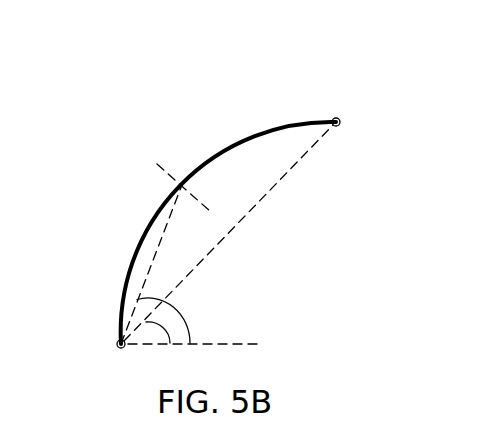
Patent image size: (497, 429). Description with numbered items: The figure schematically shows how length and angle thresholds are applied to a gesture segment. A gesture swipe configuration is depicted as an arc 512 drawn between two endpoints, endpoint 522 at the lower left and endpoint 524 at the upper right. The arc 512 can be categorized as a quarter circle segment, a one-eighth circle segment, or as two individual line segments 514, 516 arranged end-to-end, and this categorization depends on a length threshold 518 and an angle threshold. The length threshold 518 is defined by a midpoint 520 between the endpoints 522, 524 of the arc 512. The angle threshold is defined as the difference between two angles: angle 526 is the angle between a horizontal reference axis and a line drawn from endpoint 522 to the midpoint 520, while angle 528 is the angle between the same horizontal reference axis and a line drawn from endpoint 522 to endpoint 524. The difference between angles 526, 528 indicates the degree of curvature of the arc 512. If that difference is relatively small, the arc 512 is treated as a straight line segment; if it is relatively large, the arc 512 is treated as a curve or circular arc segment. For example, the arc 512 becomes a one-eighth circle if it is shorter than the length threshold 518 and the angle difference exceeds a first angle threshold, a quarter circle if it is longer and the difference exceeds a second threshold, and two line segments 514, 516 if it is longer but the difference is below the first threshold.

The arc 512 is at (124, 108).
The line segment 514 is at (138, 247).
The line segment 516 is at (245, 139).
The length threshold 518 is at (156, 252).
The midpoint 520 is at (185, 190).
The endpoint 522 is at (117, 343).
The endpoint 524 is at (335, 127).
The angle 526 is at (176, 310).
The angle 528 is at (148, 325).